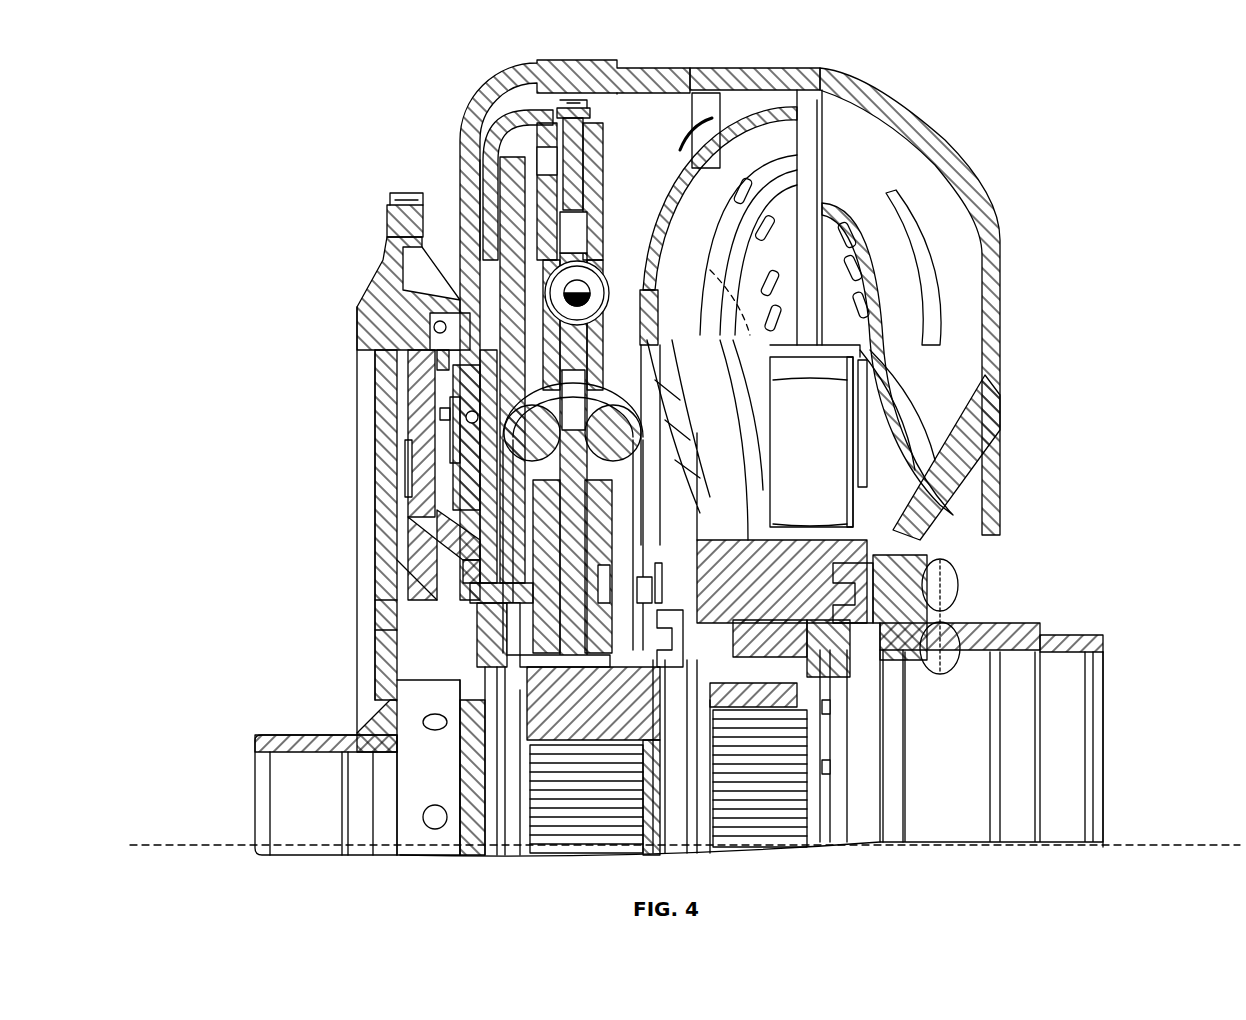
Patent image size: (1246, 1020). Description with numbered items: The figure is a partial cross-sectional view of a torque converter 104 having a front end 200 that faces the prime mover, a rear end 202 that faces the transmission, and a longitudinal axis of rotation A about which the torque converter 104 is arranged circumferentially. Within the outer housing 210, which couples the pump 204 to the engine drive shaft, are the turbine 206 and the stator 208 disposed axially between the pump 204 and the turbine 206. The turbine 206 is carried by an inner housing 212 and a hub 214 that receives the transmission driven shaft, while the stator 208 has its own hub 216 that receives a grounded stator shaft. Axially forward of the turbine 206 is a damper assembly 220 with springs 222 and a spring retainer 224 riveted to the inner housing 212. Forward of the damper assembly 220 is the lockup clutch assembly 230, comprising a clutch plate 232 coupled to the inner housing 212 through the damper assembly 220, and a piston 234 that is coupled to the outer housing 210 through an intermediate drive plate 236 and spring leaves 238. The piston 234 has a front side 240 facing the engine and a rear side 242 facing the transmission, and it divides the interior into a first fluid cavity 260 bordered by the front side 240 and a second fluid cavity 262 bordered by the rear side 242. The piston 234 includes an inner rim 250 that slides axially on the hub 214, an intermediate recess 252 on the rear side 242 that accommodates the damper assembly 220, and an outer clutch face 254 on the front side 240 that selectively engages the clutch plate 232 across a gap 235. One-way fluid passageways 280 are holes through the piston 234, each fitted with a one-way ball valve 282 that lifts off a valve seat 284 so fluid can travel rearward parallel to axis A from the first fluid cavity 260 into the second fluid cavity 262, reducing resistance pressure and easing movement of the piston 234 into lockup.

The torque converter 104 is at (350, 73).
The front end 200 is at (251, 864).
The rear end 202 is at (1115, 868).
The pump 204 is at (940, 225).
The turbine 206 is at (768, 153).
The stator 208 is at (815, 440).
The outer housing 210 is at (926, 125).
The inner housing 212 is at (788, 106).
The hub 214 is at (518, 705).
The hub 216 is at (893, 537).
The damper assembly 220 is at (553, 86).
The springs 222 is at (545, 600).
The spring retainer 224 is at (560, 112).
The lockup clutch assembly 230 is at (468, 226).
The clutch plate 232 is at (492, 166).
The piston 234 is at (455, 520).
The gap 235 is at (483, 148).
The intermediate drive plate 236 is at (418, 367).
The spring leaves 238 is at (438, 460).
The front side 240 is at (473, 352).
The rear side 242 is at (508, 335).
The inner rim 250 is at (473, 600).
The intermediate recess 252 is at (528, 606).
The outer clutch face 254 is at (518, 200).
The first fluid cavity 260 is at (422, 577).
The second fluid cavity 262 is at (655, 123).
The one-way fluid passageways 280 is at (438, 419).
The one-way valve 282 is at (458, 395).
The valve seat 284 is at (463, 438).
The longitudinal axis of rotation A is at (1133, 845).